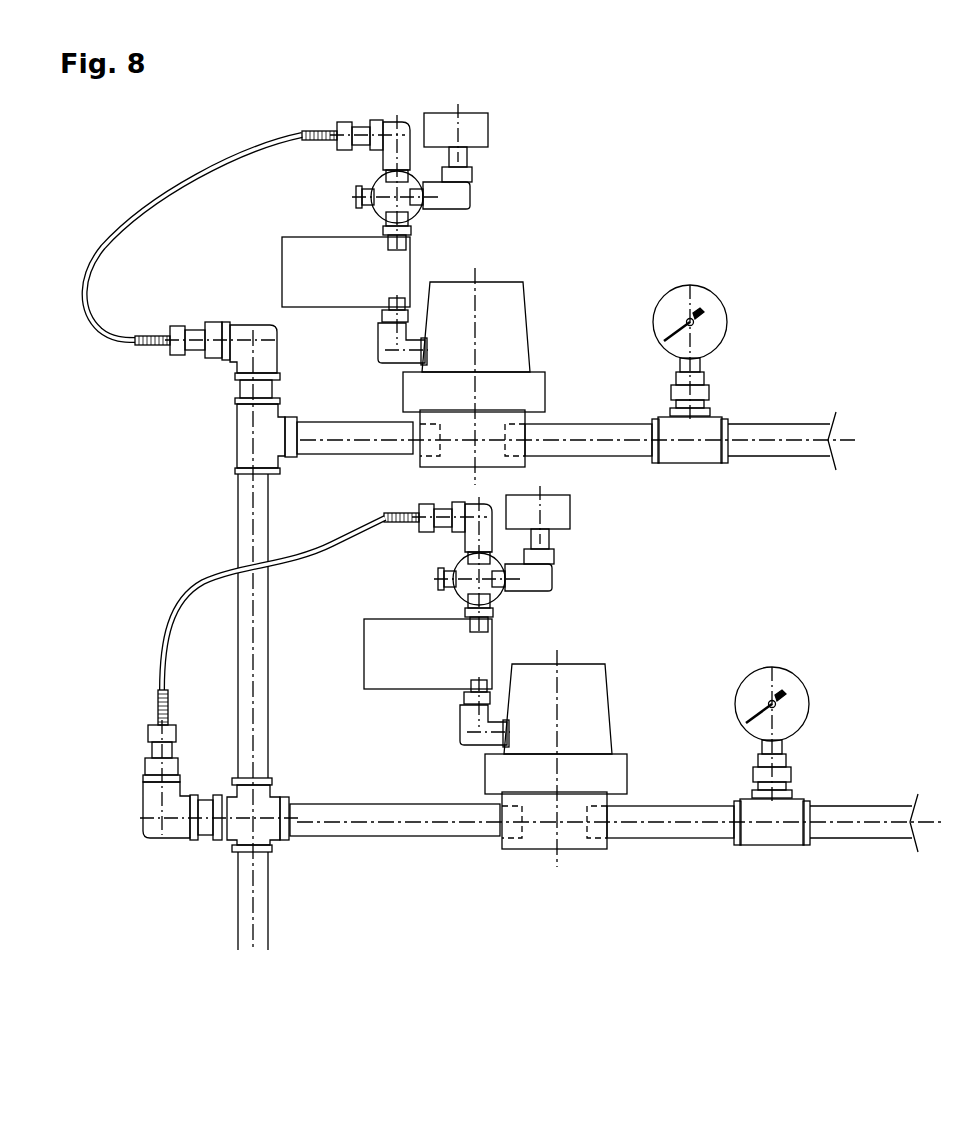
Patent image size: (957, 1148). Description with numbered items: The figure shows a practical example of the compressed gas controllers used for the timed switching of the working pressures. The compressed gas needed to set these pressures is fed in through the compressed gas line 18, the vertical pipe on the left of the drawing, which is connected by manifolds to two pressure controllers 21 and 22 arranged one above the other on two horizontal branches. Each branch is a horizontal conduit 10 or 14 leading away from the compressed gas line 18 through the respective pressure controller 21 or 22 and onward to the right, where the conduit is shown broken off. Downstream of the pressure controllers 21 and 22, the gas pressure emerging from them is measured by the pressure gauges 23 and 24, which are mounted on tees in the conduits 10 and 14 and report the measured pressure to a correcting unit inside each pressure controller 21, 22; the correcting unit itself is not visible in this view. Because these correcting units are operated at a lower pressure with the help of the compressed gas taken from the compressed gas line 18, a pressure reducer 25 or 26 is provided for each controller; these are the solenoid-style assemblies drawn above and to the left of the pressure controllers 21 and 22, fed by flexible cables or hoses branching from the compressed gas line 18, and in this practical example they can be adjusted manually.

The first conduit 10 is at (783, 430).
The second conduit 14 is at (616, 688).
The compressed gas line 18 is at (240, 893).
The pressure controller 21 is at (527, 327).
The pressure controller 22 is at (594, 694).
The pressure gauge 23 is at (713, 293).
The pressure gauge 24 is at (781, 663).
The pressure reducer 25 is at (468, 200).
The pressure reducer 26 is at (496, 616).